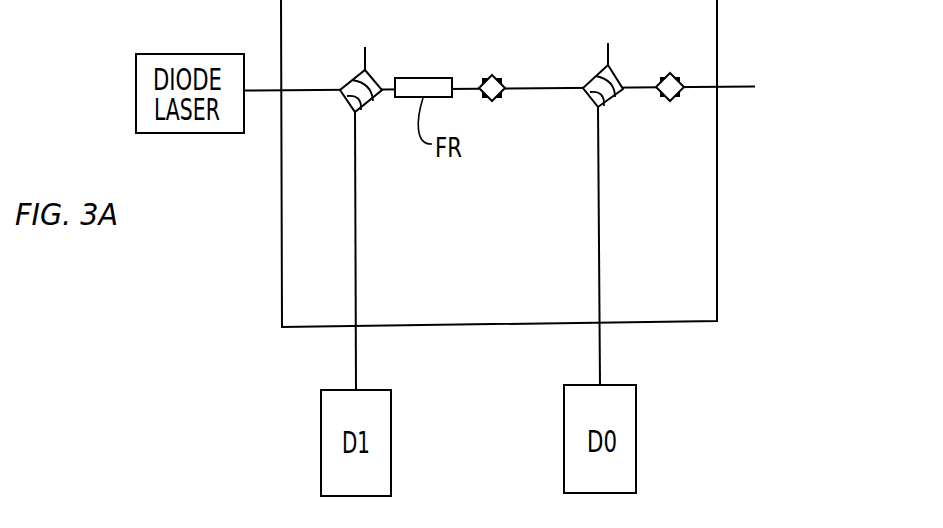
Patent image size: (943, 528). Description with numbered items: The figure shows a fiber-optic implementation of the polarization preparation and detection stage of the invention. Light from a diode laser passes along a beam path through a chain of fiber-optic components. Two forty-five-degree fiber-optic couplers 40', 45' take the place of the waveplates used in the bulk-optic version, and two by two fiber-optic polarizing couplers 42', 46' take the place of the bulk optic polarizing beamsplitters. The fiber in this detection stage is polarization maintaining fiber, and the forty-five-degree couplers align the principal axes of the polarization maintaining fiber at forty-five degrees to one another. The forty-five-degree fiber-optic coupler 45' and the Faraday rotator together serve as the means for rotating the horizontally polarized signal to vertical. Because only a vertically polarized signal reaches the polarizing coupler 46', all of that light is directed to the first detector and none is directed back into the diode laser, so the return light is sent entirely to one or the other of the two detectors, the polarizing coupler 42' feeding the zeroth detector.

The forty-five-degree fiber-optic coupler 40' is at (738, 61).
The 2×2 fiber-optic polarizing coupler 42' is at (627, 106).
The forty-five-degree fiber-optic coupler 45' is at (495, 161).
The 2×2 fiber-optic polarizing coupler 46' is at (295, 119).